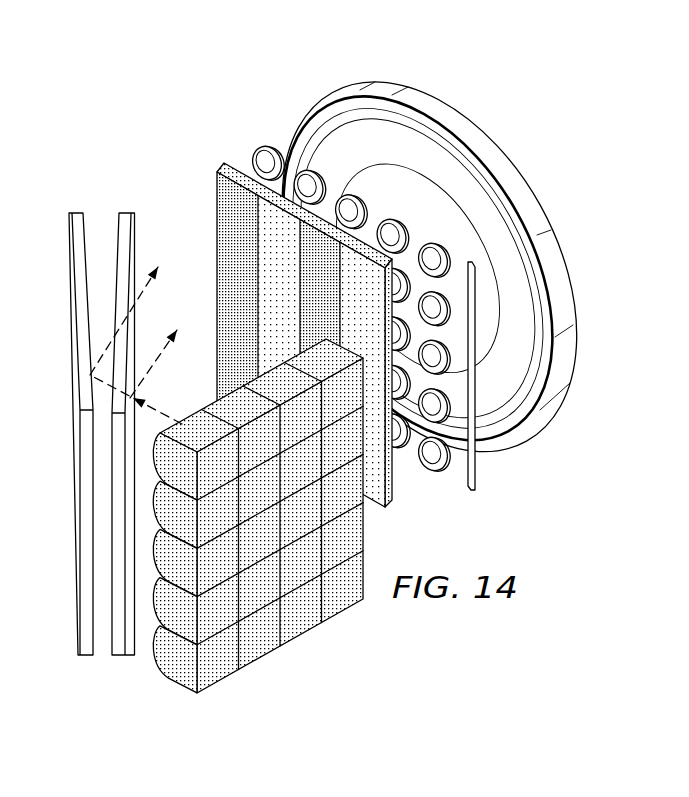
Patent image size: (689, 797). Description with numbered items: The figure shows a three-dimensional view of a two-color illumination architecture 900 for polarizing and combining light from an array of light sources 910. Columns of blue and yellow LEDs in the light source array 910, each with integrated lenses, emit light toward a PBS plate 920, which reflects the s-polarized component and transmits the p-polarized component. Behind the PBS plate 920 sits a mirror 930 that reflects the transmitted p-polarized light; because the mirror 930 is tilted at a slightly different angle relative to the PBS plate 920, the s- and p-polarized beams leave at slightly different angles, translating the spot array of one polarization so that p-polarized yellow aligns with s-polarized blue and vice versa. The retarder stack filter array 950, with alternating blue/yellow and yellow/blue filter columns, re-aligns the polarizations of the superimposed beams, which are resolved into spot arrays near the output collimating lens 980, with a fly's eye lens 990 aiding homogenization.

The optical assembly 900 is at (160, 60).
The array of light sources 910 is at (368, 618).
The PBS plate 920 is at (130, 212).
The mirror 930 is at (78, 242).
The retarder stack filter array 950 is at (207, 240).
The output collimating lens 980 is at (512, 177).
The fly's eye lens 990 is at (496, 376).